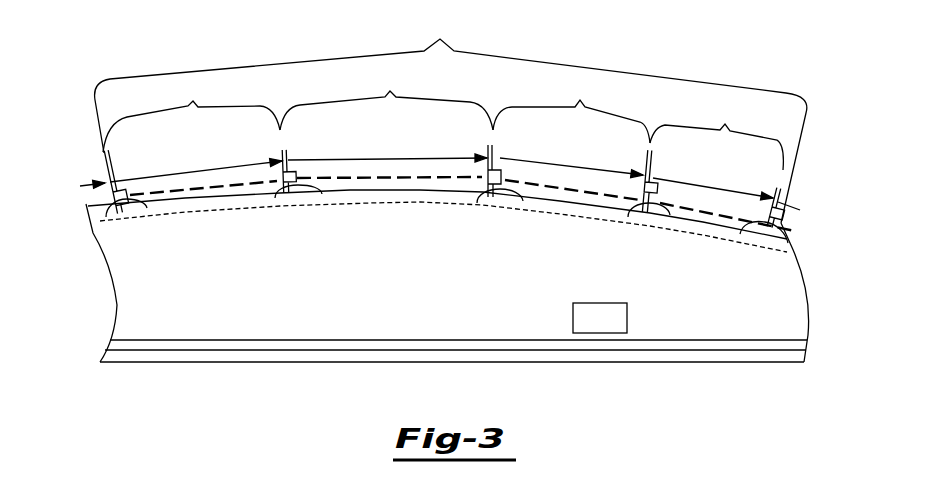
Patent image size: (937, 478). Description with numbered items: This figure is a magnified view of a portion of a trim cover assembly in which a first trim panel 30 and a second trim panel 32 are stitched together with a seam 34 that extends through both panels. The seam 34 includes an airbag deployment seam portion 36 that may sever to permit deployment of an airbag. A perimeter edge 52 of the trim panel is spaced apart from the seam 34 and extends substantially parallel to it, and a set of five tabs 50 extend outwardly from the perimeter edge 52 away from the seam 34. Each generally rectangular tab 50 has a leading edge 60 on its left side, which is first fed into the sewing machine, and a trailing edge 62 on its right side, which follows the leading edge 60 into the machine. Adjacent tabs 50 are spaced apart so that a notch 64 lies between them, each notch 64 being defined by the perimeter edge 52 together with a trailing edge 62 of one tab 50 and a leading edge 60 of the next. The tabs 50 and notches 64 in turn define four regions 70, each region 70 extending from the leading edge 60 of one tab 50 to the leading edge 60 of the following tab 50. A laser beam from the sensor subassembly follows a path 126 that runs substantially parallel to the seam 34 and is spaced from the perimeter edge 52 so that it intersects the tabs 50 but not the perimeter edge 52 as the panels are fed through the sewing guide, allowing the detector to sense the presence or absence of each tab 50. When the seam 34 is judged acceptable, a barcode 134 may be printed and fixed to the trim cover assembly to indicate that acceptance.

The first trim panel 30 is at (280, 352).
The second trim panel 32 is at (403, 346).
The seam 34 is at (383, 208).
The airbag deployment seam portion 36 is at (451, 113).
The tab 50 is at (116, 184).
The perimeter edge 52 is at (86, 207).
The leading edge 60 is at (106, 217).
The trailing edge 62 is at (147, 208).
The notch 64 is at (225, 172).
The region 70 is at (443, 114).
The path 126 is at (400, 176).
The barcode 134 is at (600, 317).